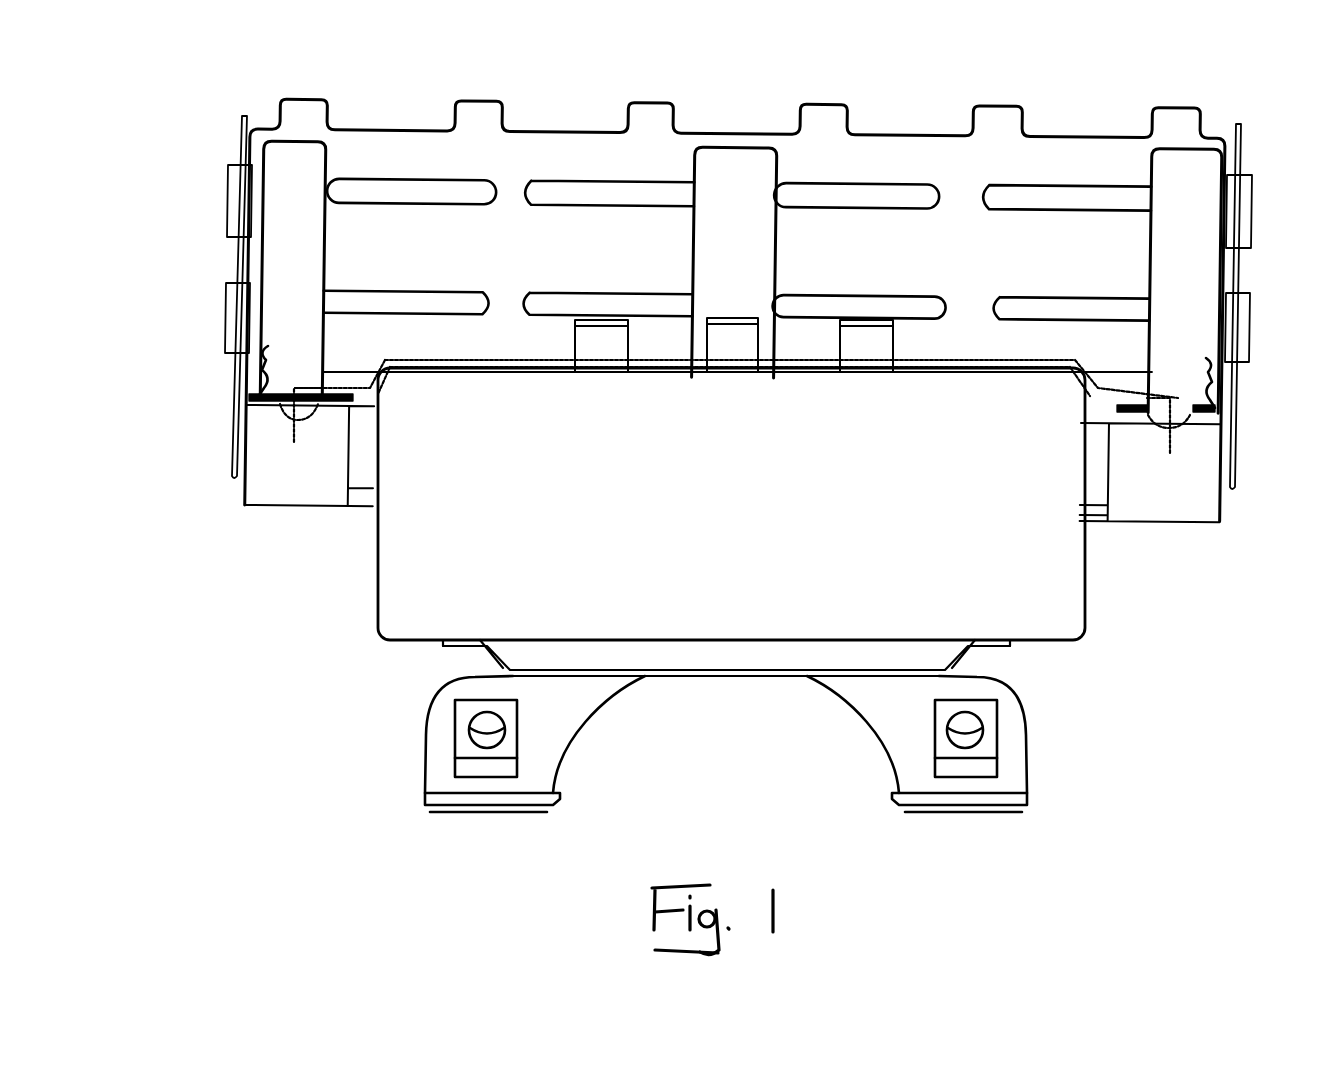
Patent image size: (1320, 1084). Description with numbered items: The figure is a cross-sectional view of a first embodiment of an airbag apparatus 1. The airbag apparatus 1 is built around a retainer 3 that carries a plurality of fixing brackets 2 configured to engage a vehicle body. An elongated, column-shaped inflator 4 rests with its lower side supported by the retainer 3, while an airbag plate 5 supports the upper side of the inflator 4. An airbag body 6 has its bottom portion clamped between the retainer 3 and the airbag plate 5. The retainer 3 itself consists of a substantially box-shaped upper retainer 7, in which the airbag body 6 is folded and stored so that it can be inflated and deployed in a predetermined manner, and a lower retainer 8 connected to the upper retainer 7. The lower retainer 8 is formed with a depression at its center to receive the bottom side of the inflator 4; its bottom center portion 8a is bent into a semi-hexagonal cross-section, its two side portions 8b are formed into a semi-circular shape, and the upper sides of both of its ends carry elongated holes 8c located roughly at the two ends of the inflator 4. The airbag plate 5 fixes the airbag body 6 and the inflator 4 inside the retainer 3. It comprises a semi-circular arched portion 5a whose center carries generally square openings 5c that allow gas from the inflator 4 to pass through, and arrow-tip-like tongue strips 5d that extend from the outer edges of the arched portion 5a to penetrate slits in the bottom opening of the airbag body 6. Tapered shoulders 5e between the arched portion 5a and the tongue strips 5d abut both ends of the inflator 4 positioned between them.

The airbag apparatus 1 is at (1254, 112).
The fixing brackets 2 is at (425, 763).
The retainer 3 is at (132, 521).
The inflator 4 is at (1073, 612).
The airbag plate 5 is at (965, 360).
The arched portion 5a is at (868, 334).
The openings 5c is at (515, 350).
The tongue strips 5d is at (1167, 453).
The shoulders 5e is at (376, 376).
The airbag body 6 is at (262, 360).
The upper retainer 7 is at (230, 454).
The lower retainer 8 is at (242, 506).
The bottom center portion 8a is at (722, 678).
The side portions 8b is at (446, 655).
The elongated holes 8c is at (288, 420).